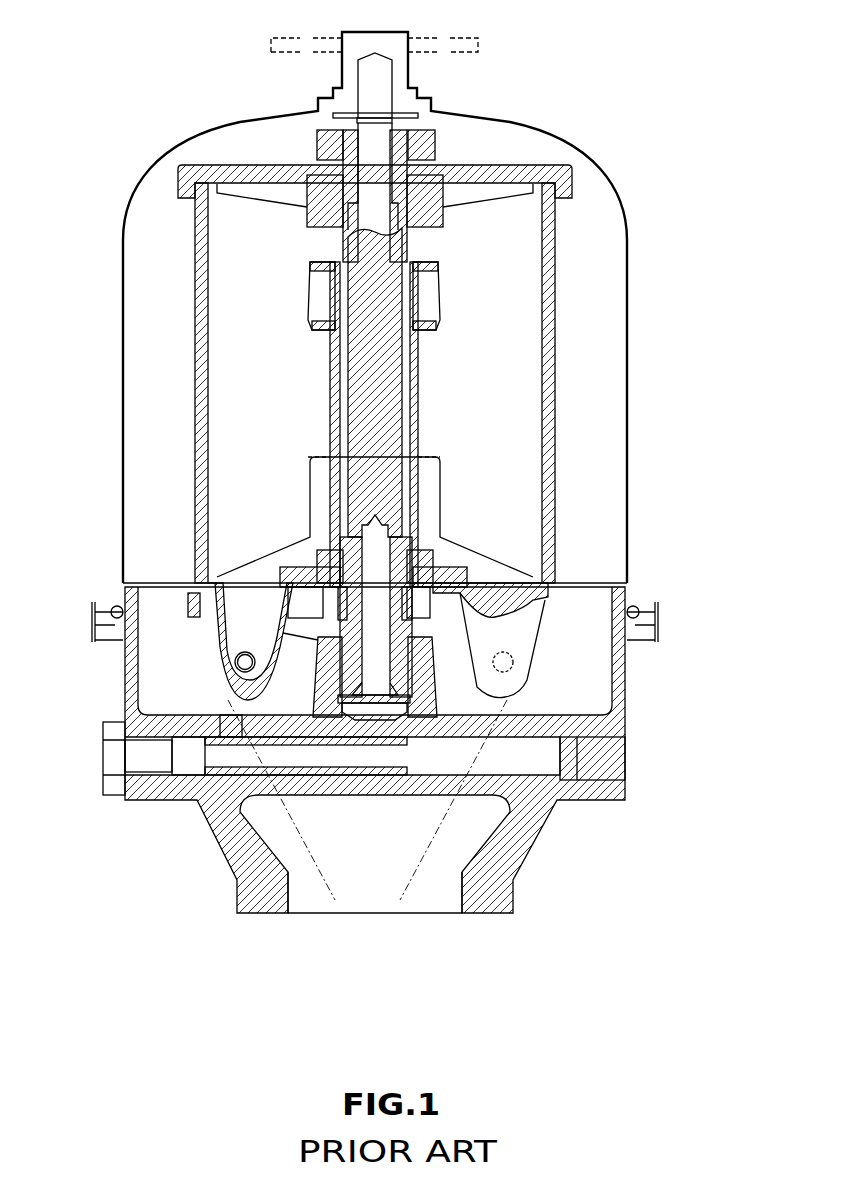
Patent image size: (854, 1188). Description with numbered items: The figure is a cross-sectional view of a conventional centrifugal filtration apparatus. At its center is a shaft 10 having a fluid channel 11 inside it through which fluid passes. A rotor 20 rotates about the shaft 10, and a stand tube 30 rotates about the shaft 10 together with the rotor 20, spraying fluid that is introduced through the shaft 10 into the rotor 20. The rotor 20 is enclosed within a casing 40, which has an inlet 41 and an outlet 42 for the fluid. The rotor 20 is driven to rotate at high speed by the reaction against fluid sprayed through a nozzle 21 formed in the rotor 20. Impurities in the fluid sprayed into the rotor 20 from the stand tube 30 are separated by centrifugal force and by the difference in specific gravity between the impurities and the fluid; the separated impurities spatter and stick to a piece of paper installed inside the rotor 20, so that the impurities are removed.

The shaft 10 is at (383, 406).
The fluid channel 11 is at (433, 665).
The rotor 20 is at (545, 322).
The nozzle 21 is at (245, 655).
The stand tube 30 is at (413, 443).
The casing 40 is at (627, 238).
The inlet 41 is at (540, 757).
The outlet 42 is at (376, 893).